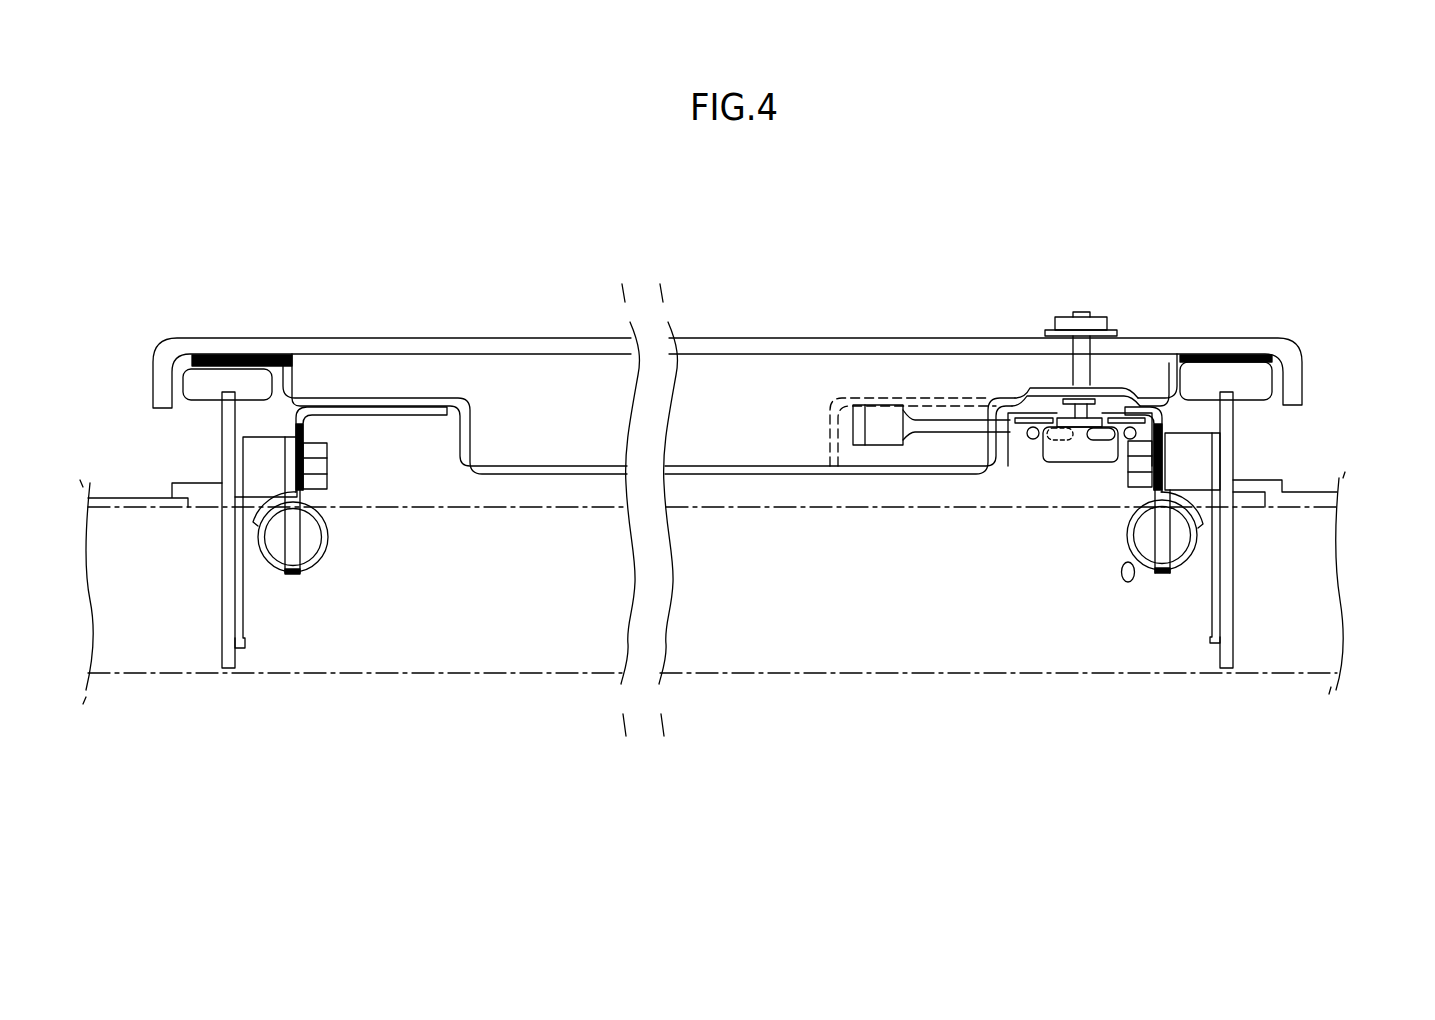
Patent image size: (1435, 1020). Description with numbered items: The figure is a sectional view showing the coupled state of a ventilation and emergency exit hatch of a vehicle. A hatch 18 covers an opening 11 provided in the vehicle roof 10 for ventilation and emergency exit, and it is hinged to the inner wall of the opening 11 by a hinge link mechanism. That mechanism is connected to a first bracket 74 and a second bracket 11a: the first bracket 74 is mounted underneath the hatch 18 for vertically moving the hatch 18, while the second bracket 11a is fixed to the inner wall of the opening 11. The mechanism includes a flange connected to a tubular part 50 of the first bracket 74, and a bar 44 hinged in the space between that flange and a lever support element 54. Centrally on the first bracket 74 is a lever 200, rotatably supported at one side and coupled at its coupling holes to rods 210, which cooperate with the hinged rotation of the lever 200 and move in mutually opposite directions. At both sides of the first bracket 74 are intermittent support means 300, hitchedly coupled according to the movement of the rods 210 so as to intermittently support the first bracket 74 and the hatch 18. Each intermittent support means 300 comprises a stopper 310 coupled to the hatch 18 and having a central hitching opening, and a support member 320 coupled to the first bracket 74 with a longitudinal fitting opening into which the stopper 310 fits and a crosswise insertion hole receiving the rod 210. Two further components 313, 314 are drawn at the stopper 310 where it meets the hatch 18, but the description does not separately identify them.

The vehicle roof 10 is at (155, 692).
The opening 11 is at (495, 633).
The second bracket 11a is at (1213, 613).
The hatch 18 is at (412, 332).
The bar 44 is at (292, 562).
The tubular part 50 is at (327, 550).
The lever support element 54 is at (258, 445).
The first bracket 74 is at (400, 415).
The lever 200 is at (882, 418).
The rods 210 is at (1030, 440).
The intermittent support means 300 is at (1047, 487).
The stopper 310 is at (1050, 397).
The screw 313 is at (1087, 370).
The mounting bolt 314 is at (1067, 322).
The support member 320 is at (1078, 467).